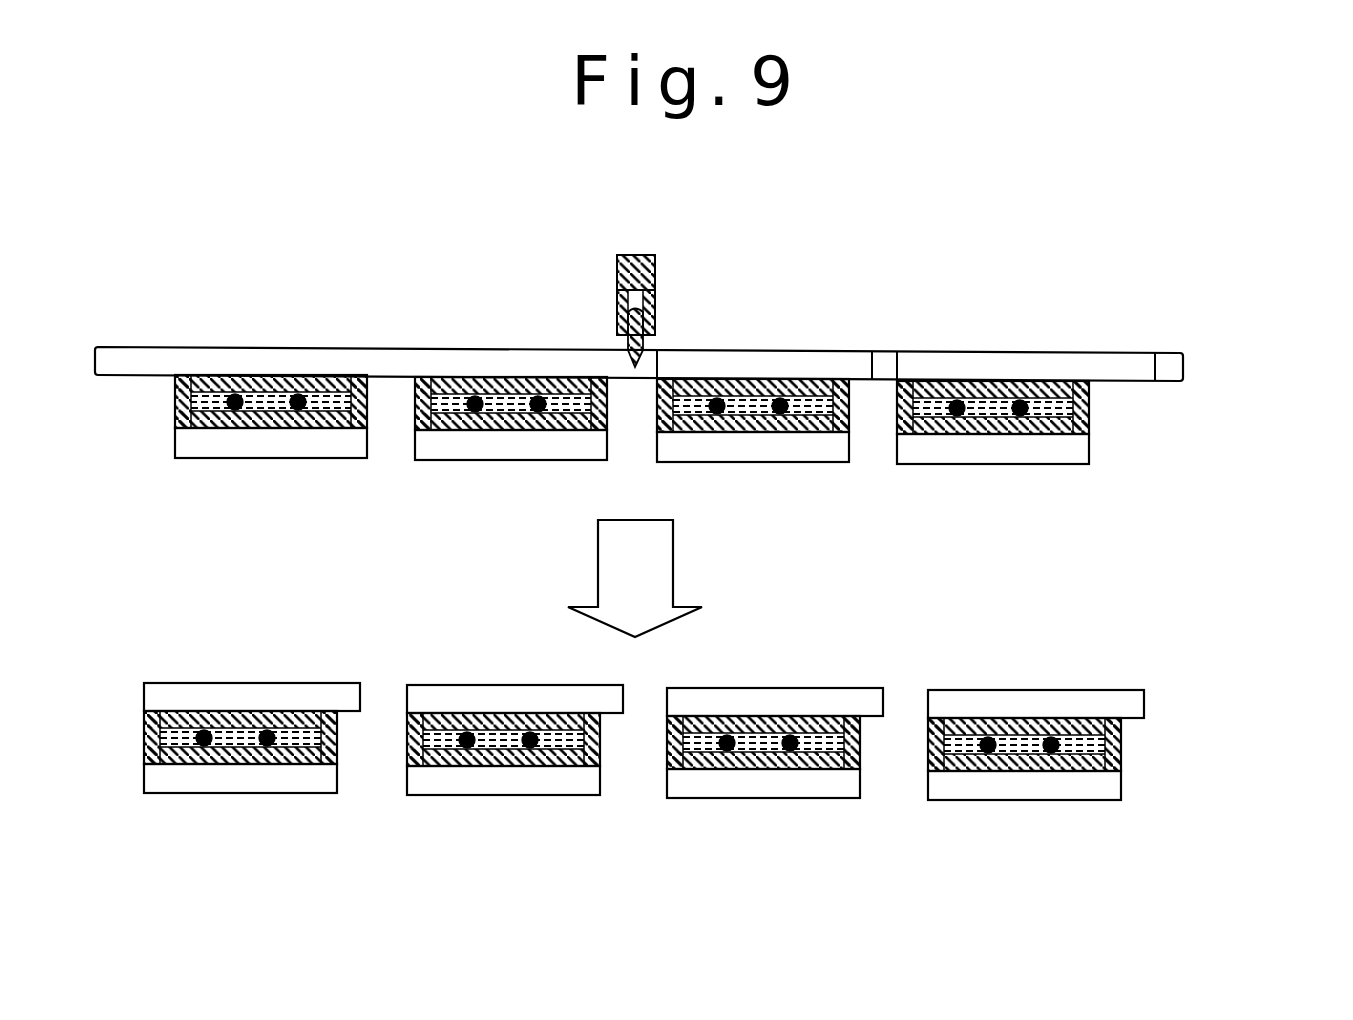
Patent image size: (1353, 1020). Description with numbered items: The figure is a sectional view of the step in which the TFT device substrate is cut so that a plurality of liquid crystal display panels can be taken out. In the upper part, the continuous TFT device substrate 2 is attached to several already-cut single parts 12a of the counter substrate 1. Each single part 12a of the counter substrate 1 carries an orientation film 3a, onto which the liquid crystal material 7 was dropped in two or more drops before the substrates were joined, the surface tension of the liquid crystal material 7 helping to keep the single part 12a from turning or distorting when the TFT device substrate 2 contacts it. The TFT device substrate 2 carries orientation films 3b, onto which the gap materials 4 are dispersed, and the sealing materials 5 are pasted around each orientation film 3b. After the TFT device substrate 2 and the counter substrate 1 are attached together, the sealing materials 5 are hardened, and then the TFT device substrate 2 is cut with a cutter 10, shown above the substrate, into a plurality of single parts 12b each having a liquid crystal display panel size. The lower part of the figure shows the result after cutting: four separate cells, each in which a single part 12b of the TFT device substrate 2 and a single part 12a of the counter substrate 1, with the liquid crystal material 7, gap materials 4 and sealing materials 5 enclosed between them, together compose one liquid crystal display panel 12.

The counter substrate 1 is at (1072, 455).
The TFT device substrate 2 is at (1105, 372).
The orientation film 3a is at (932, 430).
The orientation film 3b is at (950, 392).
The gap material 4 is at (313, 385).
The sealing material 5 is at (370, 393).
The liquid crystal material 7 is at (207, 393).
The cutter 10 is at (655, 322).
The liquid crystal display panel 12 is at (1126, 741).
The single part 12a is at (1025, 790).
The single part 12b is at (1000, 700).